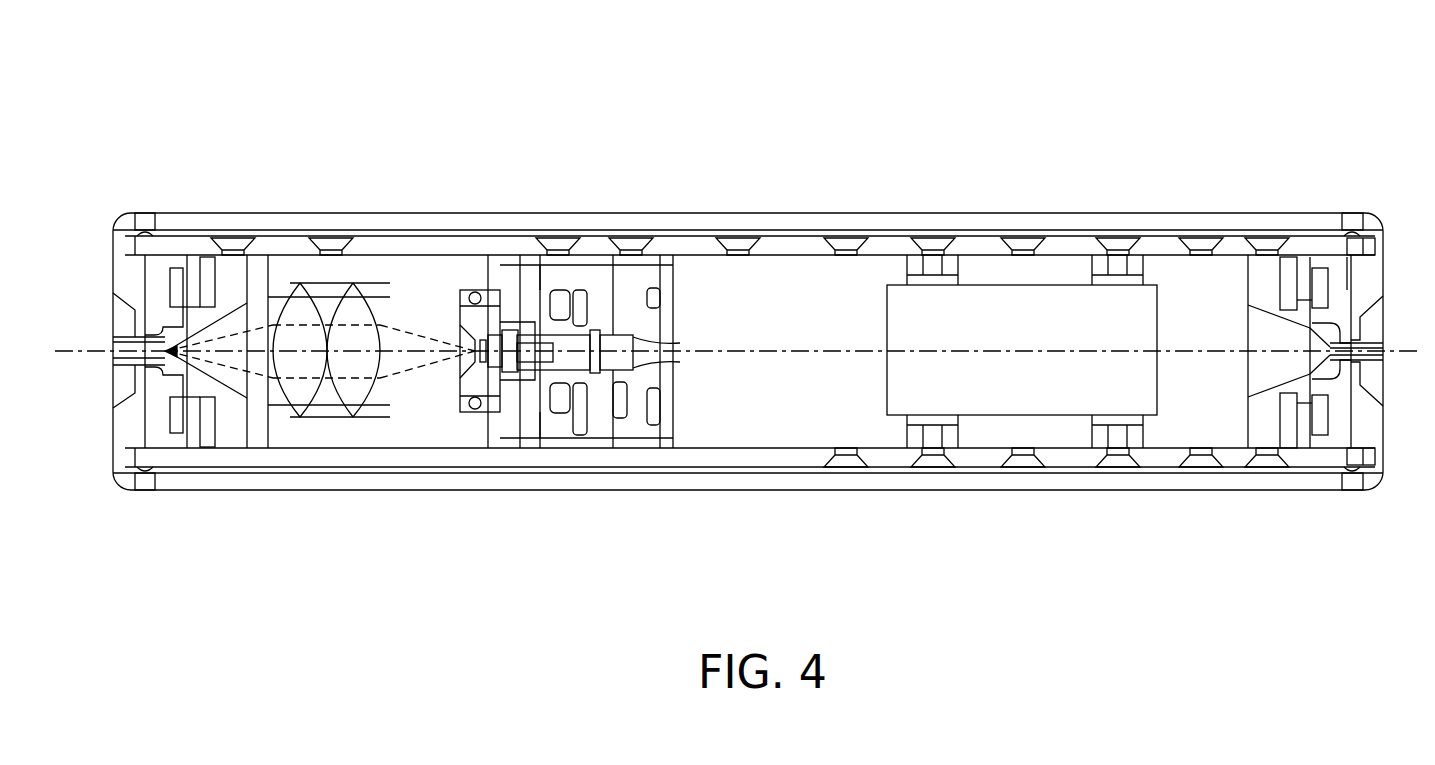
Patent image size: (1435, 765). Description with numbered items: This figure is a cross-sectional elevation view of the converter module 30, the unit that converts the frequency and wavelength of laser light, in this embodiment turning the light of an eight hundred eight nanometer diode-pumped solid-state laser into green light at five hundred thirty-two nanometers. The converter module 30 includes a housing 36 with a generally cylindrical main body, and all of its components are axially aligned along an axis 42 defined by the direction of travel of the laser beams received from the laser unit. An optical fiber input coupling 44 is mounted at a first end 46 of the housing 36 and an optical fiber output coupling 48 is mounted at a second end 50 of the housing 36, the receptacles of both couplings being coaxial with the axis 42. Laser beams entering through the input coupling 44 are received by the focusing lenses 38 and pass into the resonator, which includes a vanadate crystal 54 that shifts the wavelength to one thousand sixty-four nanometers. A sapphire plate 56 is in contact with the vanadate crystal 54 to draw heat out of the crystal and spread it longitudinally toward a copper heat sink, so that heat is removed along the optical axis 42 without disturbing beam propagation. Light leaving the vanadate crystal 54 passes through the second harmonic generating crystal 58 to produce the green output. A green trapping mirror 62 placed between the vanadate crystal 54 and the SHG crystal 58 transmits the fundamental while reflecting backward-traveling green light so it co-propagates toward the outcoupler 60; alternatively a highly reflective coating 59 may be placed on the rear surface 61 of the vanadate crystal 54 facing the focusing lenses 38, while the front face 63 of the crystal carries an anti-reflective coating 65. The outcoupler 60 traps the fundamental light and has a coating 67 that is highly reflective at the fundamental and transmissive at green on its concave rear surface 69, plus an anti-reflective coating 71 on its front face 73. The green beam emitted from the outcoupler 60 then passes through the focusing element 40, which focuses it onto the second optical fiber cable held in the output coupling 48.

The converter module 30 is at (415, 123).
The housing 36 is at (808, 213).
The focusing lenses 38 is at (322, 290).
The focusing element 40 is at (1010, 333).
The axis 42 is at (70, 360).
The optical fiber input coupling 44 is at (113, 313).
The first end 46 is at (121, 491).
The optical fiber output coupling 48 is at (1373, 318).
The second end 50 is at (1367, 491).
The vanadate crystal 54 is at (498, 377).
The sapphire plate 56 is at (489, 330).
The second harmonic generating crystal 58 is at (582, 331).
The coating 59 is at (462, 373).
The outcoupler 60 is at (668, 268).
The rear surface 61 is at (488, 363).
The green trapping mirror 62 is at (540, 370).
The front face 63 is at (515, 333).
The coating 65 is at (523, 320).
The coating 67 is at (596, 330).
The concave rear surface 69 is at (613, 336).
The coating 71 is at (650, 360).
The front face 73 is at (650, 343).